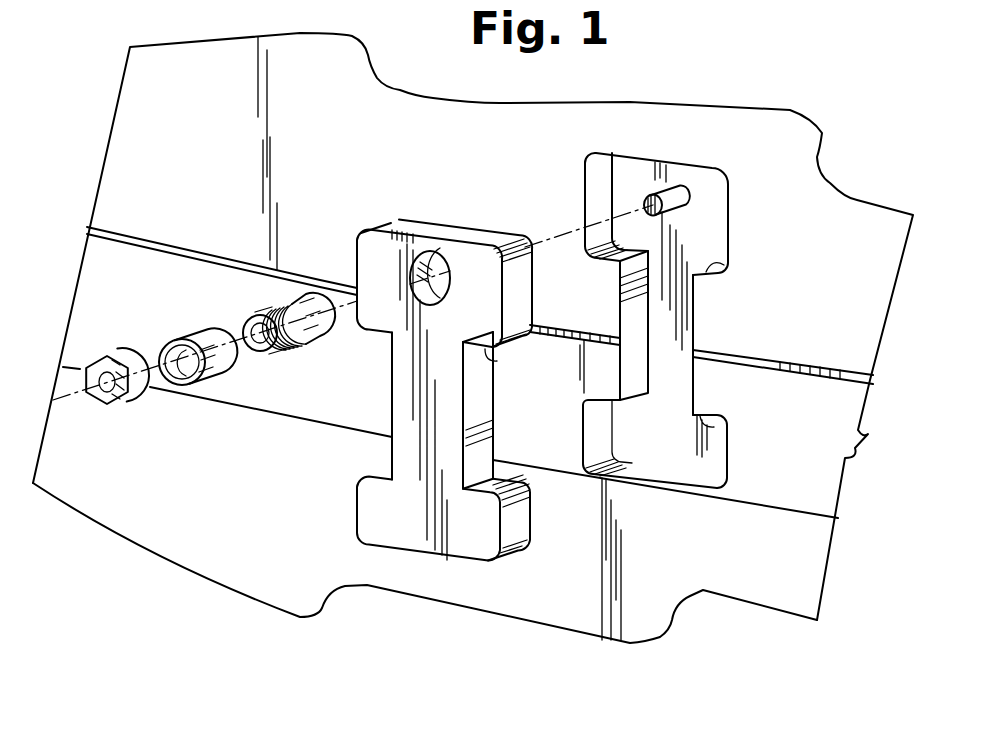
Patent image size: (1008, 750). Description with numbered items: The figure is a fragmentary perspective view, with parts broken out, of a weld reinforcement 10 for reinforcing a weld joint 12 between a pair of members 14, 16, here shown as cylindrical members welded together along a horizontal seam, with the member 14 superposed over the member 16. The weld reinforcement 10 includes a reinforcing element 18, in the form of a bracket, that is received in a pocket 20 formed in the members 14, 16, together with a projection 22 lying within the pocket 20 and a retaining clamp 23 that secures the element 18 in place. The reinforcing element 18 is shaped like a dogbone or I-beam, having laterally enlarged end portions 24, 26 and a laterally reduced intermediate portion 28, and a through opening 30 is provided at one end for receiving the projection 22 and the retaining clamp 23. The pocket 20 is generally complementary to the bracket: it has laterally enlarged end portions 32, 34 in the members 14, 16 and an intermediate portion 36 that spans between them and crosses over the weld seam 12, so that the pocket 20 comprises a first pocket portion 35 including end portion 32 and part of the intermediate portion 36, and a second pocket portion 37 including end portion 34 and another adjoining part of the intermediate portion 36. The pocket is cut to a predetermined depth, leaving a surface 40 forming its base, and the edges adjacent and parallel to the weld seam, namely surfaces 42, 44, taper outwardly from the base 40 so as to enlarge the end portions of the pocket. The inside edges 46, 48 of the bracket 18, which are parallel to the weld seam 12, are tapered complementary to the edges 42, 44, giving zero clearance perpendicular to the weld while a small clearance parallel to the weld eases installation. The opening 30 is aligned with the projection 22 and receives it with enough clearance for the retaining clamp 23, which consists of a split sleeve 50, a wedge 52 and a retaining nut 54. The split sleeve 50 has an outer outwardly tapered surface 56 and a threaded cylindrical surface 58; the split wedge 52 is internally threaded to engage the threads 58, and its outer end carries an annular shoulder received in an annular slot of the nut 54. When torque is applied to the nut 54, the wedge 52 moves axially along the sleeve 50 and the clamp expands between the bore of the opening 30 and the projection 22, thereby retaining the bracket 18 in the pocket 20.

The weld reinforcement 10 is at (862, 455).
The weld joint 12 is at (833, 378).
The member 14 is at (843, 210).
The member 16 is at (820, 505).
The reinforcing element 18 is at (436, 405).
The pocket 20 is at (662, 321).
The projection 22 is at (686, 192).
The retaining clamp 23 is at (207, 412).
The end portion 24 is at (371, 512).
The end portion 26 is at (373, 247).
The intermediate portion 28 is at (393, 405).
The through opening 30 is at (432, 272).
The end portion 32 is at (623, 183).
The end portion 34 is at (603, 440).
The first pocket portion 35 is at (657, 265).
The intermediate portion 36 is at (664, 350).
The second pocket portion 37 is at (663, 397).
The surface 40 is at (707, 237).
The surface 42 is at (720, 268).
The surface 44 is at (703, 427).
The inside edge 46 is at (508, 488).
The inside edge 48 is at (497, 359).
The split sleeve 50 is at (273, 279).
The wedge 52 is at (193, 328).
The retaining nut 54 is at (120, 350).
The outwardly tapered surface 56 is at (302, 293).
The threaded cylindrical surface 58 is at (266, 310).